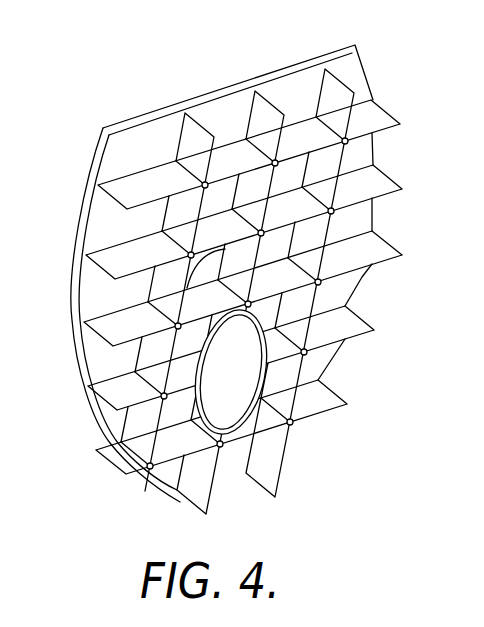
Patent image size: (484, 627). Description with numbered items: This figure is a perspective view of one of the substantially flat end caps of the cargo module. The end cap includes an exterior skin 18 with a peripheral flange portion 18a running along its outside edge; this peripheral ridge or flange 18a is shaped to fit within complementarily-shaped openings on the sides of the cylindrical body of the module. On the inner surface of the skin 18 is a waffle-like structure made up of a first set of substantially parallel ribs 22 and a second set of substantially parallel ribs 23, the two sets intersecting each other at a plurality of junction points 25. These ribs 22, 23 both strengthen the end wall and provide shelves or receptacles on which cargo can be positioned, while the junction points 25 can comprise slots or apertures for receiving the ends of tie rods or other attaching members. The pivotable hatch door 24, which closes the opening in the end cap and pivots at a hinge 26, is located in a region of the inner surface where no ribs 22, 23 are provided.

The exterior skin 18 is at (197, 273).
The peripheral flange portion 18a is at (80, 237).
The ribs in a first set 22 is at (192, 136).
The ribs in a second set 23 is at (383, 113).
The pivotable hatch door 24 is at (252, 383).
The junction points 25 is at (159, 404).
The hinge 26 is at (218, 332).